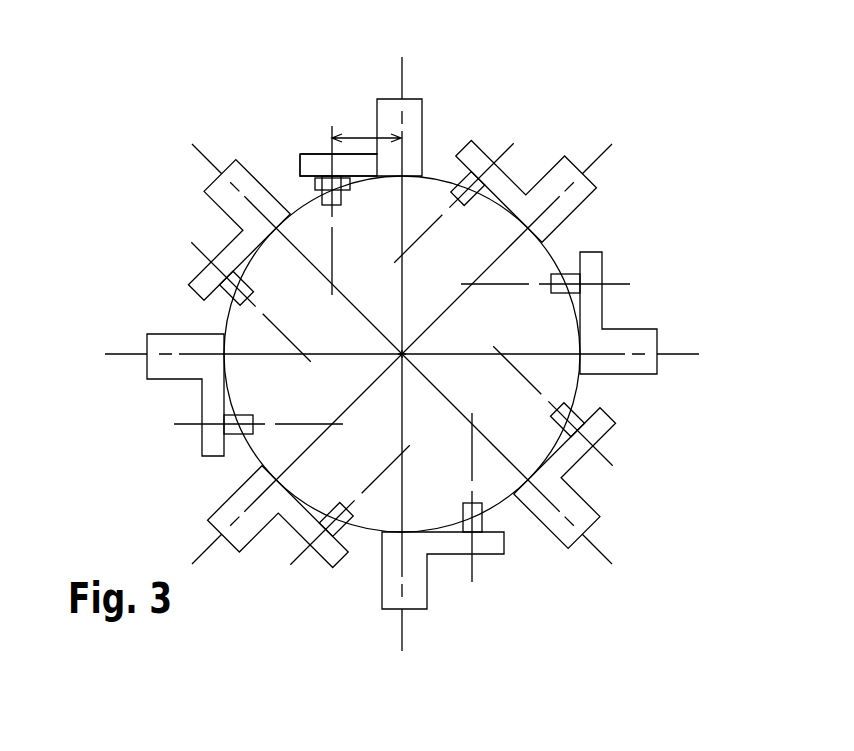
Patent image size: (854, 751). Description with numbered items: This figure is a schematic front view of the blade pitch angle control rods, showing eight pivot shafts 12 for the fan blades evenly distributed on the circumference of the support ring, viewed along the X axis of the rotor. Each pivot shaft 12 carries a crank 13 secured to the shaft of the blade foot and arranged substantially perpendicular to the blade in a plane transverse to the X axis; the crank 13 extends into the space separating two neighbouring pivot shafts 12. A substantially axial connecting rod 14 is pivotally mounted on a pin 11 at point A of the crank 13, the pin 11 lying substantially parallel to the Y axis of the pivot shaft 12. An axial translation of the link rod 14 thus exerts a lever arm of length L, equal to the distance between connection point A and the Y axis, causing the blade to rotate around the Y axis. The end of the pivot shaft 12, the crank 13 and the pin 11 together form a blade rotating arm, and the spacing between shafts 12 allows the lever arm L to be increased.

The pin 11 is at (328, 207).
The pivot shaft 12 is at (410, 112).
The crank 13 is at (363, 162).
The connecting rod 14 is at (317, 187).
The connection point A is at (330, 145).
The lever arm length L is at (360, 128).
The rotor axis X is at (400, 354).
The pivot shaft axis Y is at (401, 72).